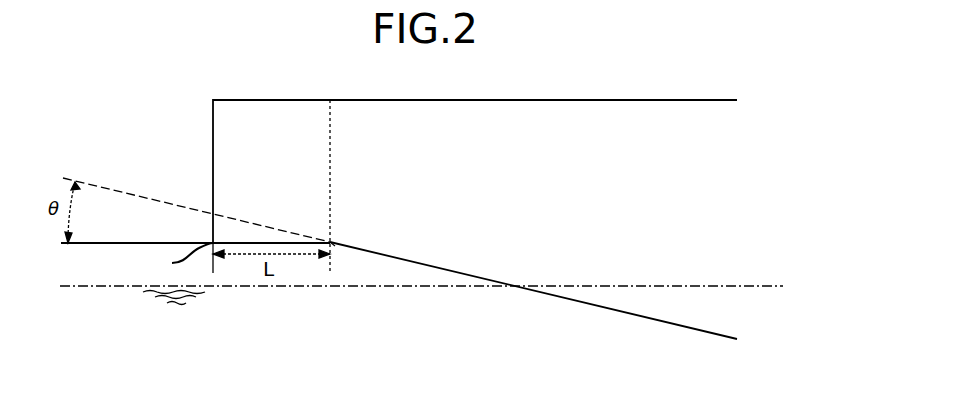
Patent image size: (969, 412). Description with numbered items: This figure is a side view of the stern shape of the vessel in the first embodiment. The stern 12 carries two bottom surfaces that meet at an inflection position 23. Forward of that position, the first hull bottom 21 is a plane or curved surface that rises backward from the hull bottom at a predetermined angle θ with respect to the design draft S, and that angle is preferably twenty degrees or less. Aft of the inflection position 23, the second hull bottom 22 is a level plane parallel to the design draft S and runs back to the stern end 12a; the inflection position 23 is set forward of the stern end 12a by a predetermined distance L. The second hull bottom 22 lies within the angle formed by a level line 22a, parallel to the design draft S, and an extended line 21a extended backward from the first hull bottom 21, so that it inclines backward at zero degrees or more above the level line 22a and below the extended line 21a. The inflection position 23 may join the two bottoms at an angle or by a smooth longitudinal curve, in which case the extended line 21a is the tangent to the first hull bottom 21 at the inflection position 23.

The stern 12 is at (466, 173).
The stern end 12a is at (174, 259).
The first hull bottom 21 is at (472, 277).
The extended line 21a is at (128, 192).
The second hull bottom 22 is at (248, 250).
The level line 22a is at (115, 243).
The inflection position 23 is at (332, 243).
The design draft S is at (123, 282).